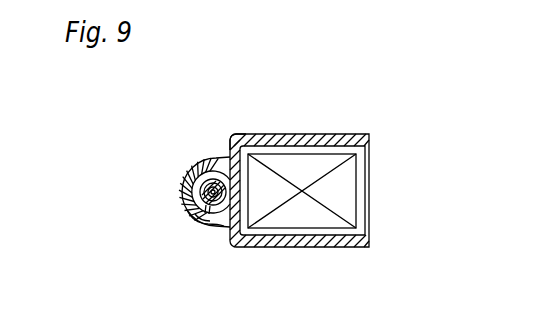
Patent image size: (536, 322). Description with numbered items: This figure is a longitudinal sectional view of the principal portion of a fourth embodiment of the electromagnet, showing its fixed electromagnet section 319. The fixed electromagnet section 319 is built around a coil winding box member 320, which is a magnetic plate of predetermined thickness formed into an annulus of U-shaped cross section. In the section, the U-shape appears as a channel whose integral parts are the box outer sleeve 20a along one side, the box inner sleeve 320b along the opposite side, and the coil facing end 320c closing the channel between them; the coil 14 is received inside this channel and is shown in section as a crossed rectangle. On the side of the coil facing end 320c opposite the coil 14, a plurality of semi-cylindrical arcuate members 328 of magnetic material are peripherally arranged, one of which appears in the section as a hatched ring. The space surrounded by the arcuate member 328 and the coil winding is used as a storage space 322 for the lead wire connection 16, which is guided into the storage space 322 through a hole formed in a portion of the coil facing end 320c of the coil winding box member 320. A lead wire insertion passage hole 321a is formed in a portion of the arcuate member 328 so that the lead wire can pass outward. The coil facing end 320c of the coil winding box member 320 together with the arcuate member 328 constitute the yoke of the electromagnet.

The coil 14 is at (345, 187).
The lead wire connection 16 is at (200, 170).
The top wall of frame 20a is at (329, 134).
The fixed electromagnet section 319 is at (227, 128).
The coil winding box member 320 is at (270, 129).
The box inner sleeve 320b is at (332, 246).
The coil facing end 320c is at (237, 195).
The lead wire insertion passage hole 321a is at (182, 185).
The storage space 322 is at (208, 208).
The semi-cylindrical arcuate member 328 is at (190, 213).